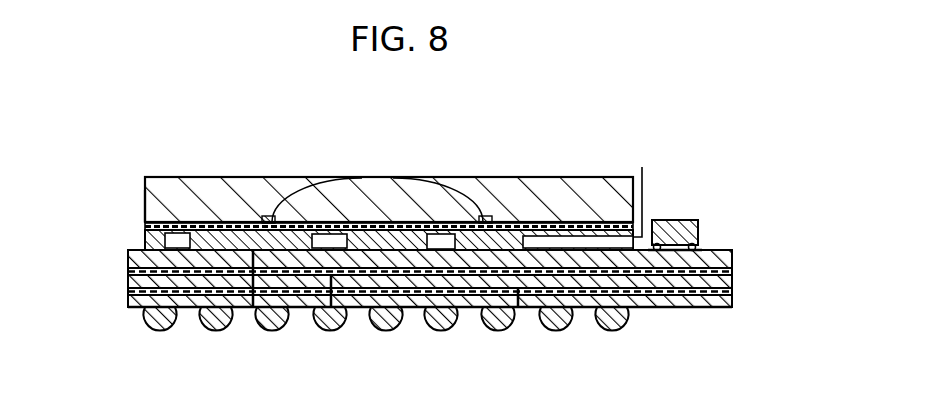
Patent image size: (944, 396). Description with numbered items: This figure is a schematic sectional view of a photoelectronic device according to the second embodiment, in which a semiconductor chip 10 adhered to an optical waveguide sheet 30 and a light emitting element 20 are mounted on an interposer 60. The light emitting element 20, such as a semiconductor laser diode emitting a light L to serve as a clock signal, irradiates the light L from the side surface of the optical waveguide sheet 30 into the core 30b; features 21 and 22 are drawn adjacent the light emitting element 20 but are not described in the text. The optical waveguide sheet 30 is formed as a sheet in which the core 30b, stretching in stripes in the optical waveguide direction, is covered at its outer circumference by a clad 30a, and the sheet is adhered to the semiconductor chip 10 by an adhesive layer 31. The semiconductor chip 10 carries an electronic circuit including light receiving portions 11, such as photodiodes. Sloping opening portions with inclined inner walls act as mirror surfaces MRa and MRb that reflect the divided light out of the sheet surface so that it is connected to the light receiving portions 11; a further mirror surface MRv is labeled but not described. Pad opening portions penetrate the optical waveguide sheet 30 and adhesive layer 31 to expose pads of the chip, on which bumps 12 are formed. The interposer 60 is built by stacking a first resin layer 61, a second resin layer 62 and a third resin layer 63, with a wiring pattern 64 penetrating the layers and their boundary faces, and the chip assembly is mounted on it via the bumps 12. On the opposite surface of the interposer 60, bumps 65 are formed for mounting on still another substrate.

The semiconductor chip 10 is at (210, 178).
The light receiving portion 11 is at (378, 177).
The bumps 12 is at (145, 238).
The light emitting element 20 is at (683, 220).
The solder bump 21 is at (700, 247).
The connection pad 22 is at (700, 250).
The optical waveguide sheet 30 is at (78, 143).
The clad 30a is at (165, 177).
The core 30b is at (145, 197).
The adhesive layer 31 is at (253, 222).
The interposer 60 is at (464, 319).
The first resin layer 61 is at (583, 310).
The second resin layer 62 is at (650, 310).
The third resin layer 63 is at (693, 310).
The wiring pattern 64 is at (720, 312).
The bumps 65 is at (147, 328).
The light L is at (642, 188).
The mirror surface MRa is at (253, 262).
The via conductor v MRv is at (331, 300).
The mirror surface MRb is at (518, 312).